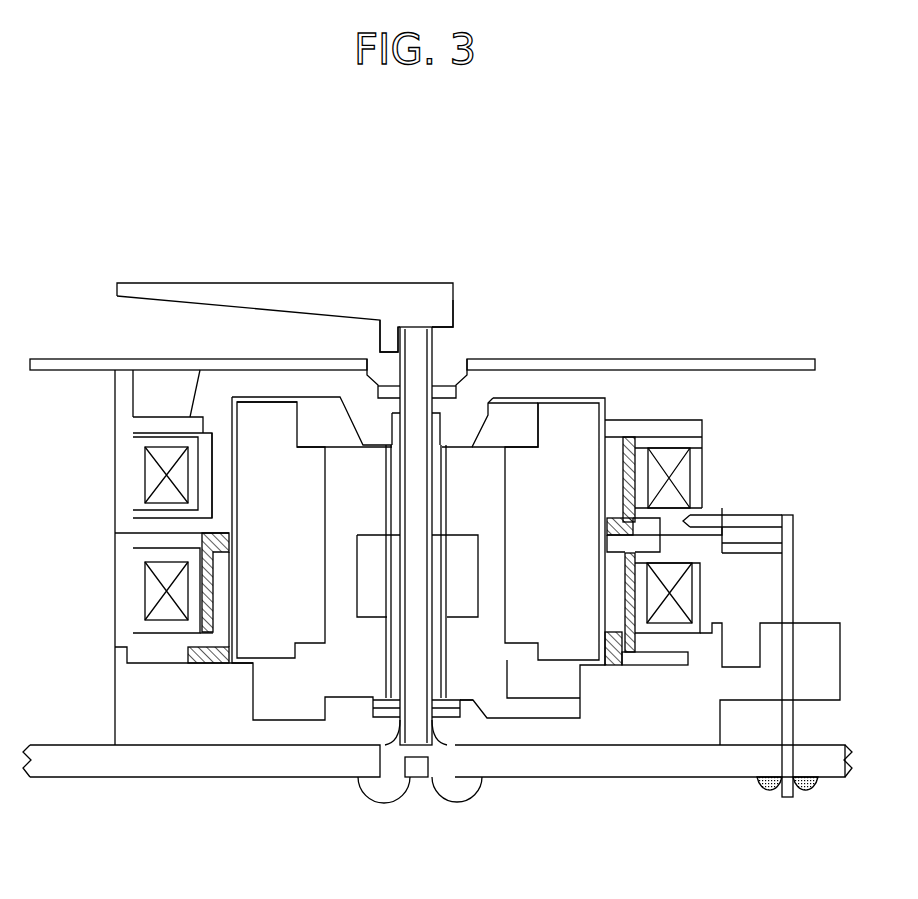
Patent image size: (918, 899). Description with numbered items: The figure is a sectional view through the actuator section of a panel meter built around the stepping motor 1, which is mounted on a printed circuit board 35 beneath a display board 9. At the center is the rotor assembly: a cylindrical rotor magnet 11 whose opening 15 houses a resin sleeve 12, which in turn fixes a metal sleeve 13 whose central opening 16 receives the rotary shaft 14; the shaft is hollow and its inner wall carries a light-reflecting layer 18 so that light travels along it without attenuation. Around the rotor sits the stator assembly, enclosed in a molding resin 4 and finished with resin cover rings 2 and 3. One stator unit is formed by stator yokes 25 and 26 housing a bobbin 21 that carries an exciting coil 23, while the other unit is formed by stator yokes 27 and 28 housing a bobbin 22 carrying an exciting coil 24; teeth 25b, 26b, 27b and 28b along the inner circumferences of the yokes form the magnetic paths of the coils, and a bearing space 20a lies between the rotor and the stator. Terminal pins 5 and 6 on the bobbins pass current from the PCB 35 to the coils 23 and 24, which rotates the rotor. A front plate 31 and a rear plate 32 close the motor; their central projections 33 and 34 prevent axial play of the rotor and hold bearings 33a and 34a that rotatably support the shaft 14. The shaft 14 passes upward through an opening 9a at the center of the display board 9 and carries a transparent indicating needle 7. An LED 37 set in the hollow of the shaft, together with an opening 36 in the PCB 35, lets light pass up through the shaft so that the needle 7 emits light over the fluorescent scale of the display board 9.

The stepping motor 1 is at (568, 200).
The cover ring 2 is at (137, 456).
The cover ring 3 is at (140, 610).
The molding resin 4 is at (644, 458).
The terminal pin 5 is at (792, 522).
The terminal pin 6 is at (758, 552).
The indicating needle 7 is at (283, 291).
The display board 9 is at (781, 368).
The opening 9a is at (443, 365).
The cylindrical rotor magnet 11 is at (270, 410).
The resin sleeve 12 is at (343, 457).
The sleeve 13 is at (462, 542).
The rotary shaft 14 is at (400, 326).
The opening 15 is at (318, 615).
The opening 16 is at (400, 577).
The light-reflecting layer 18 is at (433, 340).
The bearing space 20a is at (523, 424).
The bobbin 21 is at (642, 497).
The bobbin 22 is at (644, 594).
The exciting coil 23 is at (150, 482).
The exciting coil 24 is at (150, 582).
The stator yoke 25 is at (690, 430).
The teeth 25b is at (615, 468).
The stator yoke 26 is at (123, 398).
The teeth 26b is at (222, 477).
The stator yoke 27 is at (123, 545).
The teeth 27b is at (617, 626).
The stator yoke 28 is at (690, 641).
The teeth 28b is at (221, 604).
The front plate 31 is at (626, 382).
The rear plate 32 is at (127, 702).
The projection 33 is at (370, 427).
The bearing 33a is at (453, 381).
The projection 34 is at (358, 720).
The bearing 34a is at (455, 745).
The printed circuit board 35 is at (140, 766).
The opening 36 is at (395, 766).
The LED 37 is at (418, 770).